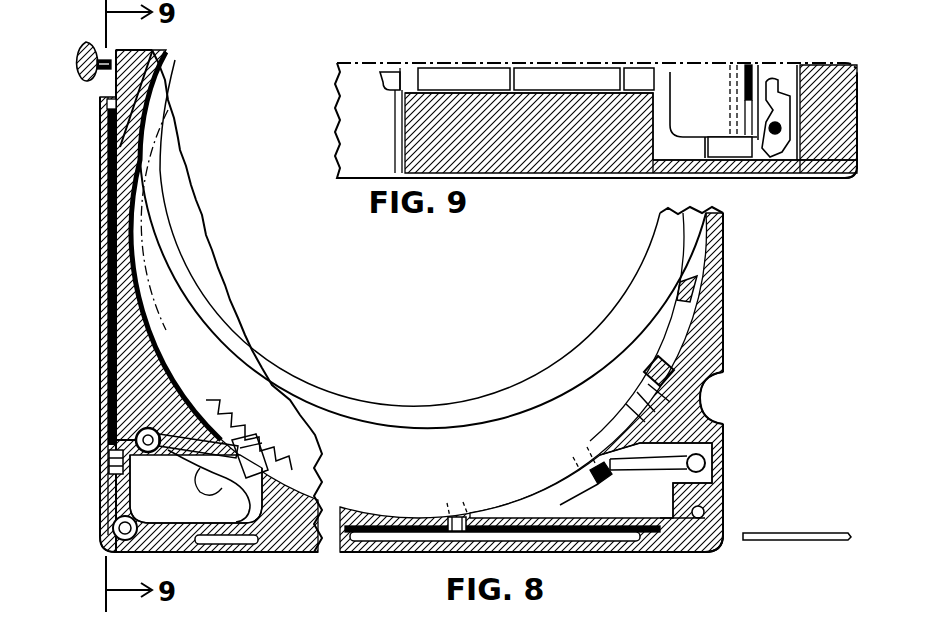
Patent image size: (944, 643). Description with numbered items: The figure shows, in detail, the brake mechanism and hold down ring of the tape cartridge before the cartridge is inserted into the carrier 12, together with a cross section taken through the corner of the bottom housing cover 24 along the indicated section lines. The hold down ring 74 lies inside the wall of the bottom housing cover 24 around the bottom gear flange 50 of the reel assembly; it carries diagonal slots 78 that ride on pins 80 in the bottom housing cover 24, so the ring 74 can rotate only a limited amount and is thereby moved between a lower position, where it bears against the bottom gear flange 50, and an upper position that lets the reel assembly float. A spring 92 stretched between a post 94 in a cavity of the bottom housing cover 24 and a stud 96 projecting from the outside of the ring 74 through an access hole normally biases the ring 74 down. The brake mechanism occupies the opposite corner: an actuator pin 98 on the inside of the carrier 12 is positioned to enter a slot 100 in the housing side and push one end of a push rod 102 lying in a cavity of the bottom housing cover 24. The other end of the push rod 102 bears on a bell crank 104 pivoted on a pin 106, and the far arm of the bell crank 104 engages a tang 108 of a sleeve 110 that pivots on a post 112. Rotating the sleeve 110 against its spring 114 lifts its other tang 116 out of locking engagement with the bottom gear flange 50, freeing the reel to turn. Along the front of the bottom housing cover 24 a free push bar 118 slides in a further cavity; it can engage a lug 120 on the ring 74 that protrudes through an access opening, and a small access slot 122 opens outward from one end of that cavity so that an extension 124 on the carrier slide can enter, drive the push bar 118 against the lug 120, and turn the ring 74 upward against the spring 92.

In FIG. 8, the carrier 12 is at (87, 44).
In FIG. 8, the bottom housing cover 24 is at (708, 350).
In FIG. 8, the bottom gear flange 50 is at (205, 371).
In FIG. 8, the hold down ring 74 is at (523, 485).
In FIG. 8, the diagonal slots 78 is at (674, 310).
In FIG. 8, the pins 80 is at (652, 368).
In FIG. 8, the spring 92 is at (708, 410).
In FIG. 8, the post 94 is at (706, 463).
In FIG. 8, the stud 96 is at (605, 482).
In FIG. 8, the actuator pin 98 is at (100, 80).
In FIG. 9, the slot 100 is at (393, 72).
In FIG. 8, the push rod 102 is at (100, 214).
In FIG. 9, the push rod 102 is at (545, 80).
In FIG. 8, the bell crank 104 is at (108, 480).
In FIG. 9, the bell crank 104 is at (775, 95).
In FIG. 9, the pin 106 is at (780, 134).
In FIG. 8, the tang 108 is at (100, 437).
In FIG. 9, the tang 108 is at (748, 65).
In FIG. 8, the sleeve 110 is at (139, 474).
In FIG. 9, the sleeve 110 is at (718, 119).
In FIG. 8, the post 112 is at (138, 432).
In FIG. 8, the spring 114 is at (197, 465).
In FIG. 8, the tang 116 is at (268, 447).
In FIG. 8, the push bar 118 is at (620, 552).
In FIG. 8, the lug 120 is at (450, 535).
In FIG. 8, the access slot 122 is at (717, 549).
In FIG. 8, the extension 124 is at (770, 532).